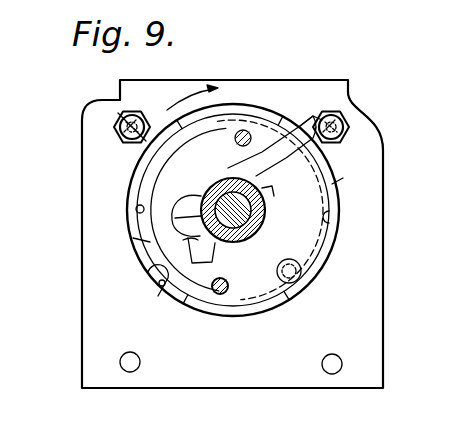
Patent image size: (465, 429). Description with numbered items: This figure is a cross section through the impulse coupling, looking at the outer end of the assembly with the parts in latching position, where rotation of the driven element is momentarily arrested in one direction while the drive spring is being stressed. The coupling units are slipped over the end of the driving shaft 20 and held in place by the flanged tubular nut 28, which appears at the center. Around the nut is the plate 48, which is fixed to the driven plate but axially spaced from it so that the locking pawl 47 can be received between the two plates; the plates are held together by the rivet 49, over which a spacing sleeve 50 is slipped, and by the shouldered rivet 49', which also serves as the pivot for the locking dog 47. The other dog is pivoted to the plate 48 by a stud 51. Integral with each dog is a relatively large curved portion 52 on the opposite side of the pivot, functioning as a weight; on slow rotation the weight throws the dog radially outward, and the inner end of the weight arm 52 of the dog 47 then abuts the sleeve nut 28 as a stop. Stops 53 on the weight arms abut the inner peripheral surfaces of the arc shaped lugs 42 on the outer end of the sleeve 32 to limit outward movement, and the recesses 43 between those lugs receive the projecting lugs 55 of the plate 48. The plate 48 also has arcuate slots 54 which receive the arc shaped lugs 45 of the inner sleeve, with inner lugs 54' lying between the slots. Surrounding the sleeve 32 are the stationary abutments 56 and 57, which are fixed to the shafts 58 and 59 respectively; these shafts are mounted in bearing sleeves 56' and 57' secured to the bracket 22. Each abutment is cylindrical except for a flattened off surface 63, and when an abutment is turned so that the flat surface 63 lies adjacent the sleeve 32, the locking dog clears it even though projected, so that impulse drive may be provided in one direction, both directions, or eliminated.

The driving shaft 20 is at (198, 212).
The bracket 22 is at (97, 340).
The flanged tubular nut 28 is at (257, 208).
The outer sleeve 32 is at (338, 249).
The arc shaped lugs 42 is at (138, 192).
The recesses 43 is at (242, 108).
The arc shaped lugs 45 is at (268, 150).
The locking dog 47 is at (293, 128).
The plate 48 is at (235, 210).
The rivet 49 is at (180, 306).
The shouldered rivet 49' is at (276, 100).
The spacing sleeve 50 is at (223, 294).
The stud 51 is at (302, 274).
The curved portion (weight arm) 52 is at (192, 242).
The stops 53 is at (136, 208).
The arcuate slots 54 is at (253, 193).
The inner lugs 54' is at (288, 185).
The projecting lugs 55 is at (331, 186).
The stationary abutment 56 is at (94, 142).
The bearing sleeve 56' is at (146, 94).
The stationary abutment 57 is at (370, 128).
The bearing sleeve 57' is at (385, 109).
The shaft 58 is at (181, 95).
The shaft 59 is at (348, 86).
The flattened off surface 63 is at (122, 133).